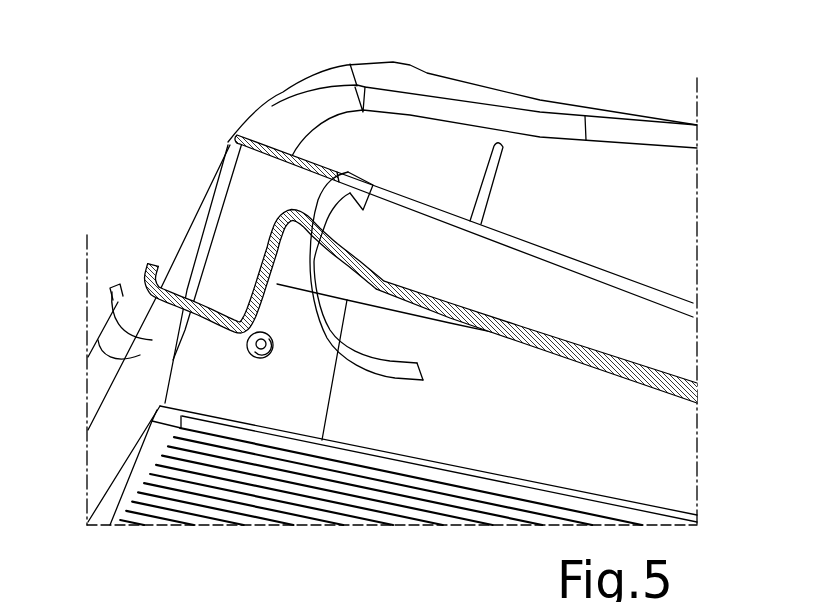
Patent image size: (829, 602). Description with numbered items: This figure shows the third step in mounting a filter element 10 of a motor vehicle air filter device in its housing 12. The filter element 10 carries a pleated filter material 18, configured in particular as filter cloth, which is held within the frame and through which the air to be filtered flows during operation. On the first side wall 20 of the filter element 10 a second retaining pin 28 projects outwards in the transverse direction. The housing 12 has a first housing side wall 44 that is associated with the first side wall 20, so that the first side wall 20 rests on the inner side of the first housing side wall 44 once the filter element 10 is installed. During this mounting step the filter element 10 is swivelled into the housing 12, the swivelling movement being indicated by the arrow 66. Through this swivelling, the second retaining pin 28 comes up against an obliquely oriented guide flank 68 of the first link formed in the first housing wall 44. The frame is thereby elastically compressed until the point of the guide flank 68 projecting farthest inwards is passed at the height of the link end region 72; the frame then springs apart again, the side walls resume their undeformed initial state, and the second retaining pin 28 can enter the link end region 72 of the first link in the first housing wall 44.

The filter element 10 is at (130, 319).
The housing 12 is at (172, 92).
The filter material 18 is at (272, 505).
The first side wall 20 is at (667, 437).
The second retaining pin 28 is at (246, 348).
The first housing side wall 44 is at (657, 333).
The arrow 66 is at (338, 218).
The guide flank 68 is at (263, 290).
The link end region 72 is at (293, 233).